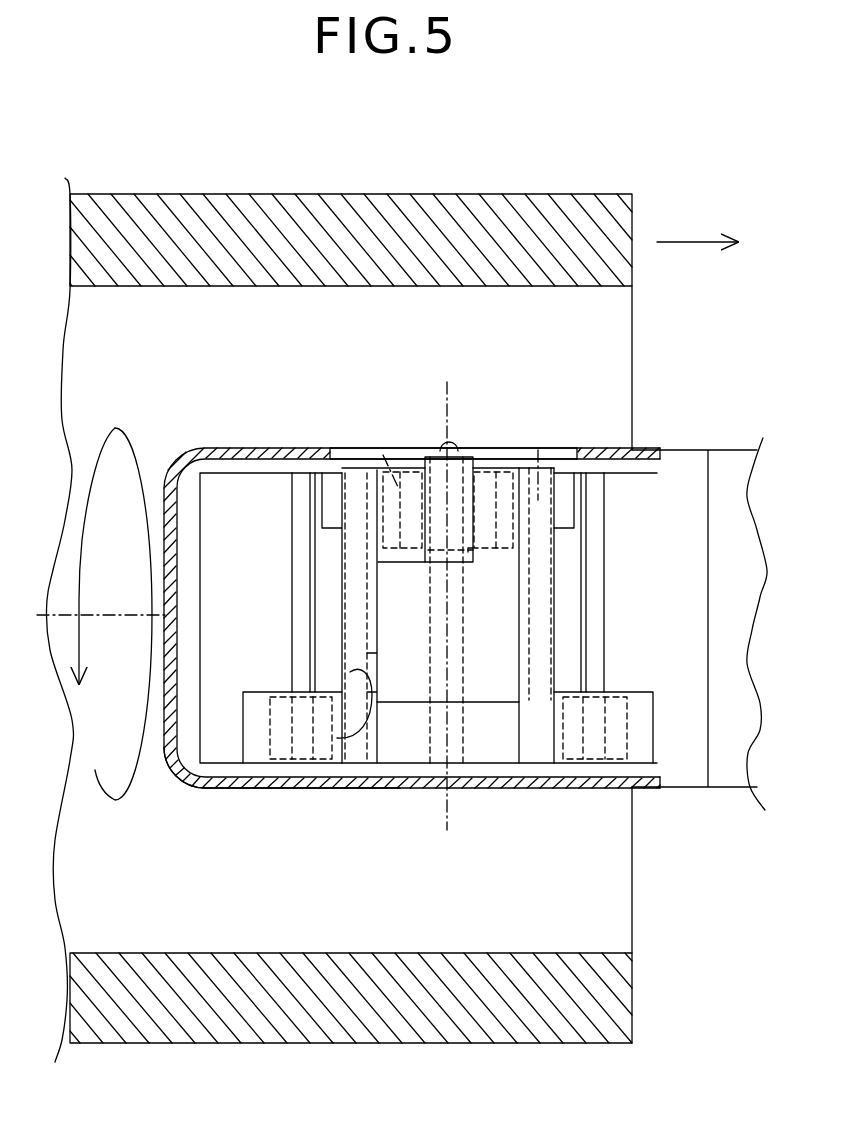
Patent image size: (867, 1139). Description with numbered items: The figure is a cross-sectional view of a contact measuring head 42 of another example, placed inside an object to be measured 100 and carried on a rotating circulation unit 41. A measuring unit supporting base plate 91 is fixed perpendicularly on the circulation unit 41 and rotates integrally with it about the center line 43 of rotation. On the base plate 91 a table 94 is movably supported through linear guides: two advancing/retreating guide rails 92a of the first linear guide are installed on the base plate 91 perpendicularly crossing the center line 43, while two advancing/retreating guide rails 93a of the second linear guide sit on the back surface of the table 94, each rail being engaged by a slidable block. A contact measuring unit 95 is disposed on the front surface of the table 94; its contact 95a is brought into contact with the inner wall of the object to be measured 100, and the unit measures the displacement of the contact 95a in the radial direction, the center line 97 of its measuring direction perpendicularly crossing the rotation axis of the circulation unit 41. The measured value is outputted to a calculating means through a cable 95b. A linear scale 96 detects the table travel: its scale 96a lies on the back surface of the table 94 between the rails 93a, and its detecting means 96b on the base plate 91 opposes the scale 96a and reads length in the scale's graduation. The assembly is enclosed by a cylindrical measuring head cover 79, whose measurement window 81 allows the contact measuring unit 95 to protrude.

The object to be measured 100 is at (403, 194).
The circulation unit 41 is at (720, 792).
The contact measuring head 42 is at (232, 418).
The center line 43 is at (117, 612).
The measuring head cover 79 is at (188, 790).
The measurement window 81 is at (507, 448).
The measuring unit supporting base plate 91 is at (198, 459).
The advancing/retreating guide rail 92a is at (597, 487).
The advancing/retreating guide rail 93a is at (538, 480).
The table 94 is at (340, 482).
The contact measuring unit 95 is at (500, 544).
The contact 95a is at (448, 450).
The cable 95b is at (340, 712).
The linear scale 96 is at (468, 729).
The scale 96a is at (438, 748).
The detecting means 96b is at (347, 478).
The center line 97 is at (447, 390).